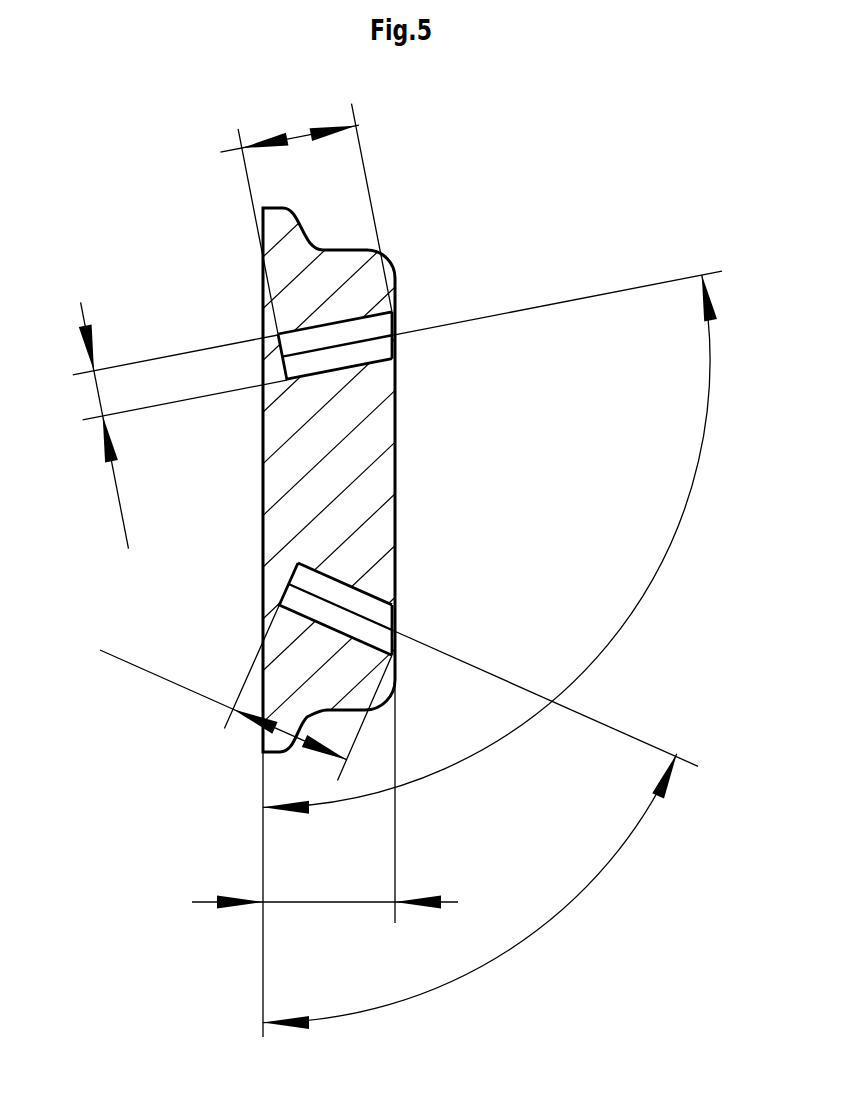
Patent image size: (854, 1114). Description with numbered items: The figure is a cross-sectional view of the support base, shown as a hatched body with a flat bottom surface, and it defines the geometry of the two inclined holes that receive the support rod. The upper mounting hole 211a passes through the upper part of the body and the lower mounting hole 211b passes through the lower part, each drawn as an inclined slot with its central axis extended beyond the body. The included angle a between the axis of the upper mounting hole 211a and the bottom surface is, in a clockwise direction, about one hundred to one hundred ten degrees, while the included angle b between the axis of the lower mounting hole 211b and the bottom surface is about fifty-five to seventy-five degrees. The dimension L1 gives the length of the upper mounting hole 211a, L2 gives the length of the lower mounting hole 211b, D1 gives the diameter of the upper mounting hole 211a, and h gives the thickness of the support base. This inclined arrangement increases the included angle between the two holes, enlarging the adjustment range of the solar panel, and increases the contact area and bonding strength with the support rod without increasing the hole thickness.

The upper mounting hole 211a is at (355, 334).
The lower mounting hole 211b is at (350, 601).
The included angle of the upper mounting hole axis a is at (492, 542).
The included angle of the lower mounting hole axis b is at (480, 829).
The diameter of the upper mounting hole D1 is at (180, 425).
The length of the upper mounting hole L1 is at (266, 219).
The length of the lower mounting hole L2 is at (246, 693).
The thickness of the support base h is at (325, 882).